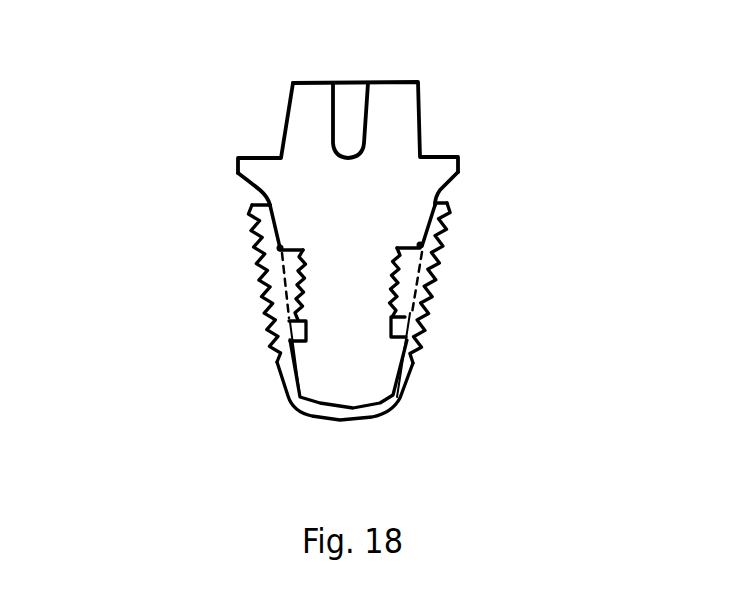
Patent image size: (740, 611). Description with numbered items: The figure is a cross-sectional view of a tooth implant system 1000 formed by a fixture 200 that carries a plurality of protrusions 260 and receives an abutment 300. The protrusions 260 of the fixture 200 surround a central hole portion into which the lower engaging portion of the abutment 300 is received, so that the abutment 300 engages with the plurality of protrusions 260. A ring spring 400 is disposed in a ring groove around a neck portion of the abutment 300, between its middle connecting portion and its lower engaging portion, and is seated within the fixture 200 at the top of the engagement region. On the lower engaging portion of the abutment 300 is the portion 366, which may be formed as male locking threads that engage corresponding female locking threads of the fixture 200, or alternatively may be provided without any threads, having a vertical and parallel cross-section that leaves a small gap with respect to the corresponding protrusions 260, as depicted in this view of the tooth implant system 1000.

The tooth implant system 1000 is at (320, 224).
The abutment 300 is at (417, 132).
The male locking threads 366 is at (314, 153).
The fixture 200 is at (286, 311).
The ring spring 400 is at (346, 207).
The protrusions 260 is at (329, 321).